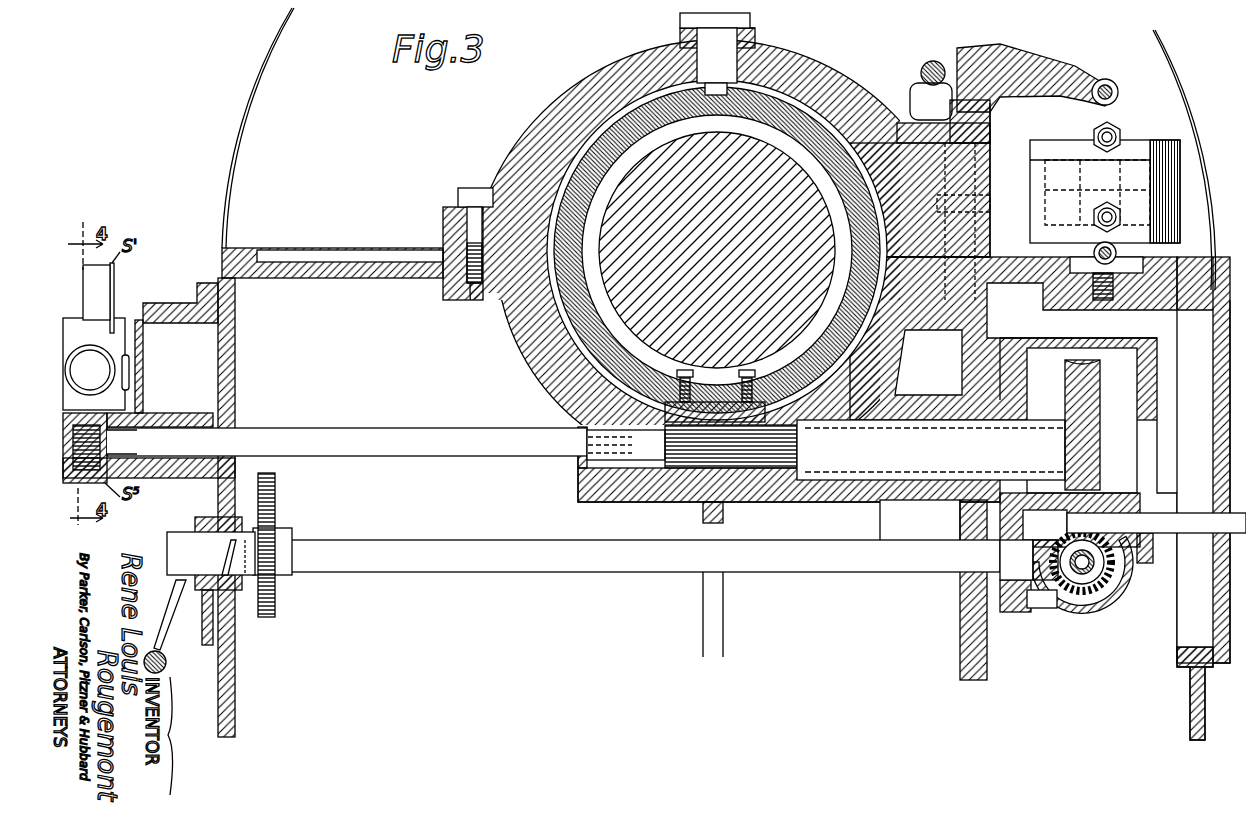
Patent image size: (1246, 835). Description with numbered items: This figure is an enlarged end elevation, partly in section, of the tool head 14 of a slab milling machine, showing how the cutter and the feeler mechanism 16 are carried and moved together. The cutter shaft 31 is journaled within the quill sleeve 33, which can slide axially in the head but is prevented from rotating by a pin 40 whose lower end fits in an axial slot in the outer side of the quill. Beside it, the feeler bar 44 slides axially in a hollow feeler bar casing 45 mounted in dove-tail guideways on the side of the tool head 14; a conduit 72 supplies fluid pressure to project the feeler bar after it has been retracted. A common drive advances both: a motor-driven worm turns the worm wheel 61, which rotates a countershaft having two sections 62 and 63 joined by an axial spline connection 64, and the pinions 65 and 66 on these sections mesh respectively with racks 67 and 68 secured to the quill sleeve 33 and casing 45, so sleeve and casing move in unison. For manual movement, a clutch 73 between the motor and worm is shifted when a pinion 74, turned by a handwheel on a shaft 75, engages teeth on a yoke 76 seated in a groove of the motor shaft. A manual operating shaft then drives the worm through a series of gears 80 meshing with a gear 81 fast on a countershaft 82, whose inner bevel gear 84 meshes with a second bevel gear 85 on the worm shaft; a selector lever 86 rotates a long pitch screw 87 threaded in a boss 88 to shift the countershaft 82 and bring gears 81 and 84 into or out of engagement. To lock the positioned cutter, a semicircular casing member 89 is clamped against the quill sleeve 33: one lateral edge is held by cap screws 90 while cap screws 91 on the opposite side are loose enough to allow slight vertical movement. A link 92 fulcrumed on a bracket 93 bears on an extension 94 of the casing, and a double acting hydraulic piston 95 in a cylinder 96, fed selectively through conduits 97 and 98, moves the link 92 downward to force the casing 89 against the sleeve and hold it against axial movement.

The tool head 14 is at (232, 140).
The feeler mechanism 16 is at (118, 296).
The cutter shaft 31 is at (815, 290).
The quill sleeve 33 is at (848, 352).
The pin 40 is at (680, 22).
The feeler bar 44 is at (130, 373).
The feeler bar casing 45 is at (125, 340).
The worm wheel 61 is at (1100, 425).
The countershaft section 62 is at (857, 482).
The countershaft section 63 is at (428, 435).
The axial spline connection 64 is at (789, 464).
The pinion 65 is at (690, 470).
The pinion 66 is at (95, 483).
The rack 67 is at (715, 412).
The rack 68 is at (115, 420).
The conduit 72 is at (90, 370).
The clutch 73 is at (1110, 590).
The pinion 74 is at (1060, 527).
The shaft 75 is at (1190, 518).
The yoke 76 is at (1115, 572).
The gears 80 is at (276, 482).
The gear 81 is at (276, 603).
The countershaft 82 is at (403, 542).
The bevel gear 84 is at (1047, 605).
The bevel gear 85 is at (1095, 608).
The selector lever 86 is at (170, 622).
The long pitch screw 87 is at (246, 530).
The boss 88 is at (226, 560).
The semicircular casing member 89 is at (531, 142).
The cap screws 90 is at (472, 193).
The cap screws 91 is at (980, 203).
The link 92 is at (1045, 70).
The bracket 93 is at (940, 62).
The extension 94 is at (990, 137).
The hydraulic piston 95 is at (1045, 193).
The cylinder 96 is at (1032, 223).
The conduit 97 is at (1120, 130).
The conduit 98 is at (1095, 226).